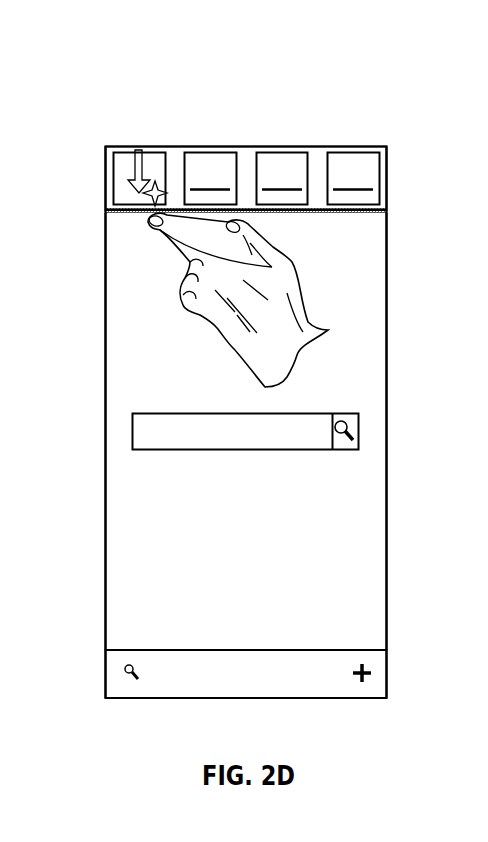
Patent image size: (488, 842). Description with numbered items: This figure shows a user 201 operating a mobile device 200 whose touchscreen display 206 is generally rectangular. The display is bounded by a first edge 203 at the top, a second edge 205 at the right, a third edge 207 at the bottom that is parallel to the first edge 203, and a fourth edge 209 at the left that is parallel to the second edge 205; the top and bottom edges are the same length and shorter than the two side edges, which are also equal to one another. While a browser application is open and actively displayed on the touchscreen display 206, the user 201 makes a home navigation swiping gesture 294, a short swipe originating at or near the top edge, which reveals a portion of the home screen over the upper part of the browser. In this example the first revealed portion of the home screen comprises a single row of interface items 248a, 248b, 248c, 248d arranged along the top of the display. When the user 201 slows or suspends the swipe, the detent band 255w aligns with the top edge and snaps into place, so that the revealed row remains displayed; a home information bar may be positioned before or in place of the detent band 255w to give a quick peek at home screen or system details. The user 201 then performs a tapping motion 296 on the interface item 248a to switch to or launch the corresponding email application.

The mobile device 200 is at (157, 64).
The user 201 is at (294, 278).
The first edge 203 is at (244, 142).
The second edge 205 is at (0, 518).
The touchscreen display 206 is at (128, 570).
The third edge 207 is at (245, 699).
The fourth edge 209 is at (105, 436).
The interface item 248a is at (118, 173).
The interface item 248b is at (211, 179).
The interface item 248c is at (282, 179).
The interface item 248d is at (354, 179).
The detent band 255w is at (387, 210).
The home navigation swiping gesture 294 is at (137, 150).
The tapping motion 296 is at (156, 190).